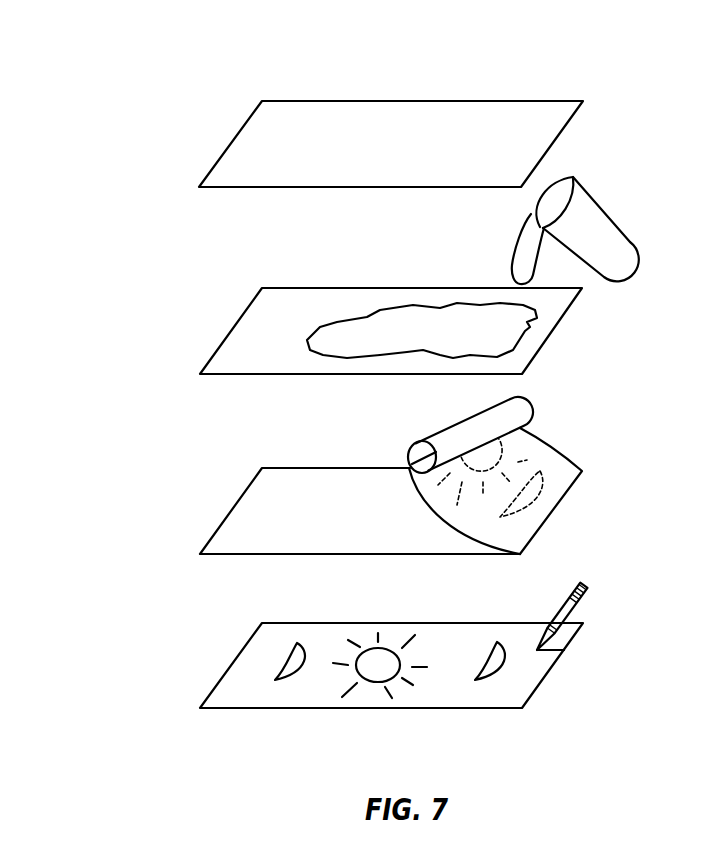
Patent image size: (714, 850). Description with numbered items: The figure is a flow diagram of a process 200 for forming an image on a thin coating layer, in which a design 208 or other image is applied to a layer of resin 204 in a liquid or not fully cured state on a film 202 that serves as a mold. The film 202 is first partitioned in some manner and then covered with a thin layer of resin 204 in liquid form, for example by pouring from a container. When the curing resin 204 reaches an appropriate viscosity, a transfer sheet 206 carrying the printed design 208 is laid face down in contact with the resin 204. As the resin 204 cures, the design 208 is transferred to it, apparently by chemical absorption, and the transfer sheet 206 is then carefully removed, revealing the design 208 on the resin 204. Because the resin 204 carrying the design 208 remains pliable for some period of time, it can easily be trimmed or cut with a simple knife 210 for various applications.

The process 200 is at (145, 76).
The film 202 is at (562, 133).
The resin 204 is at (523, 265).
The transfer sheet 206 is at (512, 531).
The design 208 is at (503, 453).
The knife 210 is at (567, 616).